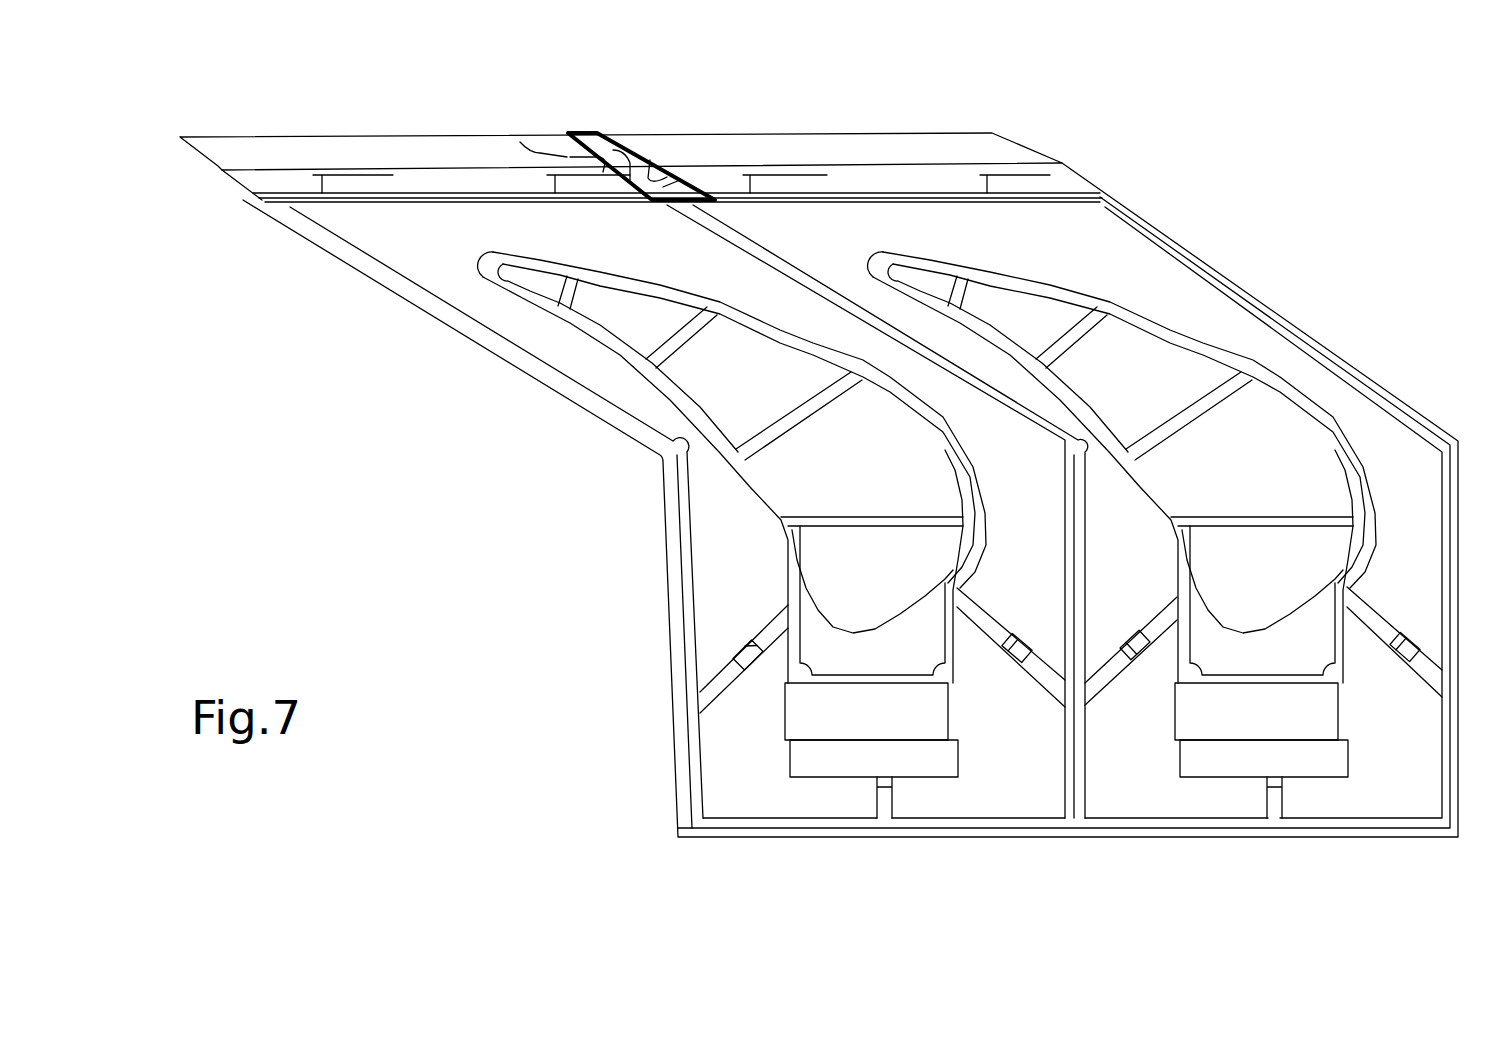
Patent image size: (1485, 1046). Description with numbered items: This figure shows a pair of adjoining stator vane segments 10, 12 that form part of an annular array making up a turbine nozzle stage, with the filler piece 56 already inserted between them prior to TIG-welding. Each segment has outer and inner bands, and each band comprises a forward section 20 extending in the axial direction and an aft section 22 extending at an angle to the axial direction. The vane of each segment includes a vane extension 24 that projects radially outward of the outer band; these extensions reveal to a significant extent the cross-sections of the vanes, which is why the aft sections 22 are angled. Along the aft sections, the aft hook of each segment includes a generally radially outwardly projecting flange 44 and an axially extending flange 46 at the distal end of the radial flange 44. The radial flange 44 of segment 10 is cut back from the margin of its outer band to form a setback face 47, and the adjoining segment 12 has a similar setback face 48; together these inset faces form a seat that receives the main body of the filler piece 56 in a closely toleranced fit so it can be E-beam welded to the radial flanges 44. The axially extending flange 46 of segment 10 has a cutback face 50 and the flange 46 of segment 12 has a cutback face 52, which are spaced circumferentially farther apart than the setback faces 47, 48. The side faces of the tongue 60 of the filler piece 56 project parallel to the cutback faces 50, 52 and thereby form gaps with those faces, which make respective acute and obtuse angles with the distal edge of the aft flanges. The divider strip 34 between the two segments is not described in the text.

The stator vane segment 10 is at (1263, 235).
The stator vane segment 12 is at (478, 395).
The forward section 20 is at (768, 776).
The aft section 22 is at (592, 248).
The vane extension 24 is at (1083, 300).
The divider rail 34 is at (745, 247).
The radial flange 44 is at (460, 180).
The axially extending flange 46 is at (378, 150).
The setback face 47 is at (650, 165).
The setback face 48 is at (575, 157).
The cutback face 50 is at (627, 135).
The cutback face 52 is at (580, 153).
The filler piece 56 is at (665, 187).
The tongue 60 is at (603, 137).